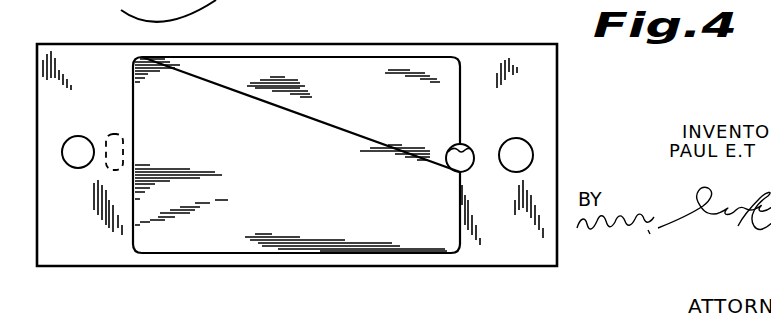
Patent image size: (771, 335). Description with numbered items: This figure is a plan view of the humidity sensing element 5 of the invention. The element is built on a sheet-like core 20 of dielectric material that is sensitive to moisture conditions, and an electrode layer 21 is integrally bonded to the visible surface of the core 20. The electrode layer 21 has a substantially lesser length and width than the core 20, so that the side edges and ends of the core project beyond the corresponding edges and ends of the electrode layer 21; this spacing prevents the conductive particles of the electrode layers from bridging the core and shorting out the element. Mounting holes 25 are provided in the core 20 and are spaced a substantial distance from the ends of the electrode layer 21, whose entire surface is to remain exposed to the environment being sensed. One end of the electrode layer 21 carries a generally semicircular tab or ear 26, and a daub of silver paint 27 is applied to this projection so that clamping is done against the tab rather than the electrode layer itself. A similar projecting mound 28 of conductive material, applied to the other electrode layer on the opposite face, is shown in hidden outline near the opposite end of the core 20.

The bearing plate assembly 5 is at (373, 43).
The core 20 is at (544, 93).
The electrode layer 21 is at (339, 127).
The mounting holes 25 is at (70, 140).
The tab or ear 26 is at (462, 145).
The daub of silver paint 27 is at (450, 164).
The projecting mound 28 is at (120, 142).